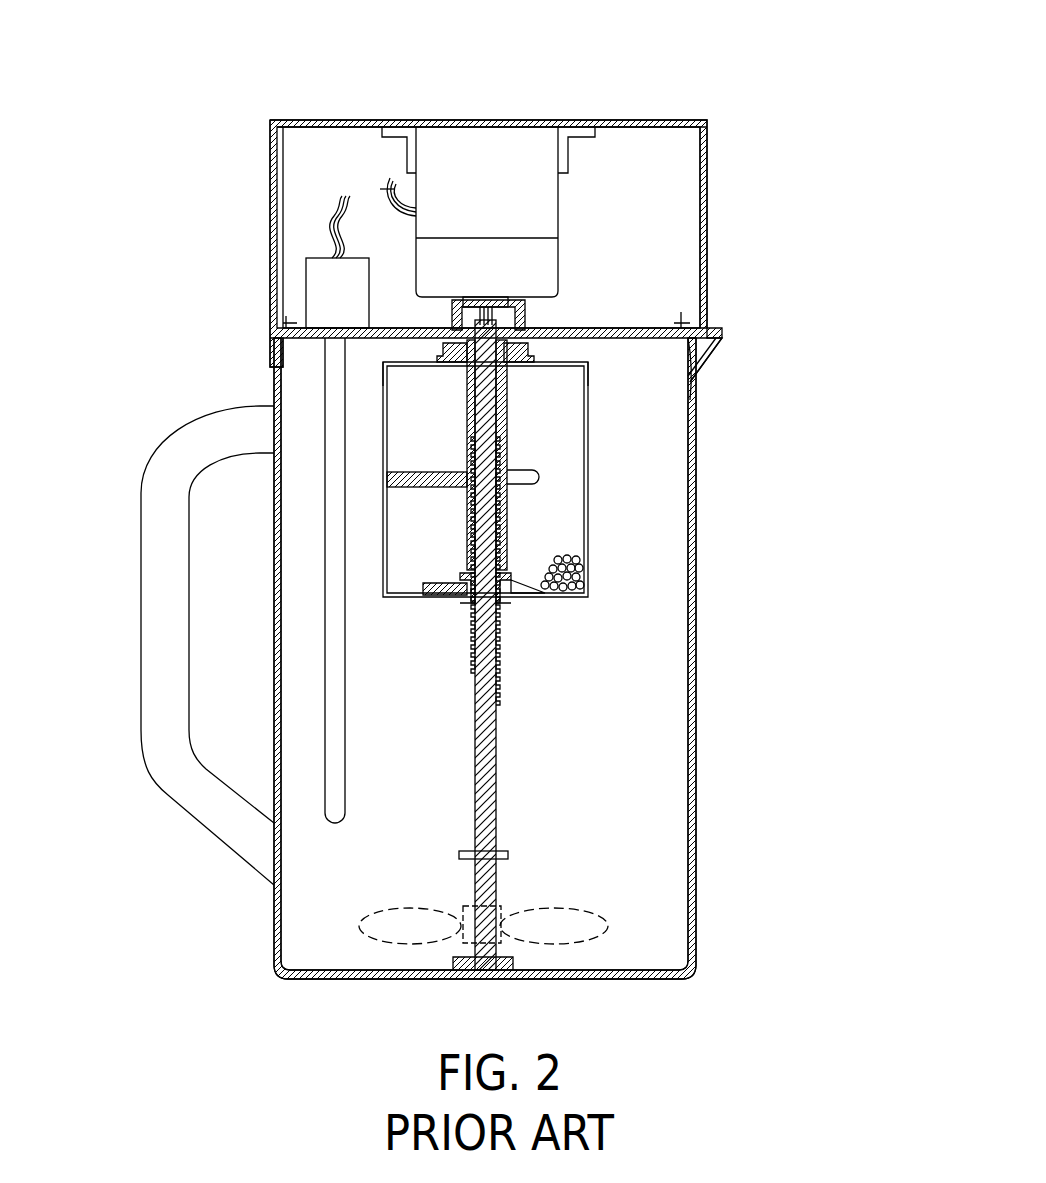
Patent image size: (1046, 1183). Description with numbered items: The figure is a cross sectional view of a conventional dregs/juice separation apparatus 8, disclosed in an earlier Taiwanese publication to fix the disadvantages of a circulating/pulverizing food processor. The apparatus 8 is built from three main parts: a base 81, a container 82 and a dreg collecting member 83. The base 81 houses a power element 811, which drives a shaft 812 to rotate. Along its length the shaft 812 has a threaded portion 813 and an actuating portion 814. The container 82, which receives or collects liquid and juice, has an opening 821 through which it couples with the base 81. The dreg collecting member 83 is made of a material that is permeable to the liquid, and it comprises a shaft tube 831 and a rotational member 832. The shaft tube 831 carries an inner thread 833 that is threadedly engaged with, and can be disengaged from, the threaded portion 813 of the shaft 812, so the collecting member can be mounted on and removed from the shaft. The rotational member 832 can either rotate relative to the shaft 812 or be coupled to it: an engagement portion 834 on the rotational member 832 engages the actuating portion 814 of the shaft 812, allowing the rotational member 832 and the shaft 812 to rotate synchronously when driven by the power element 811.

The dregs/juice separation apparatus 8 is at (684, 74).
The base 81 is at (707, 183).
The power element 811 is at (489, 163).
The shaft 812 is at (504, 405).
The threaded portion 813 is at (470, 658).
The actuating portion 814 is at (512, 853).
The container 82 is at (696, 783).
The opening 821 is at (638, 343).
The dreg collecting member 83 is at (588, 548).
The shaft tube 831 is at (506, 510).
The rotational member 832 is at (467, 568).
The inner thread 833 is at (505, 462).
The engagement portion 834 is at (510, 612).